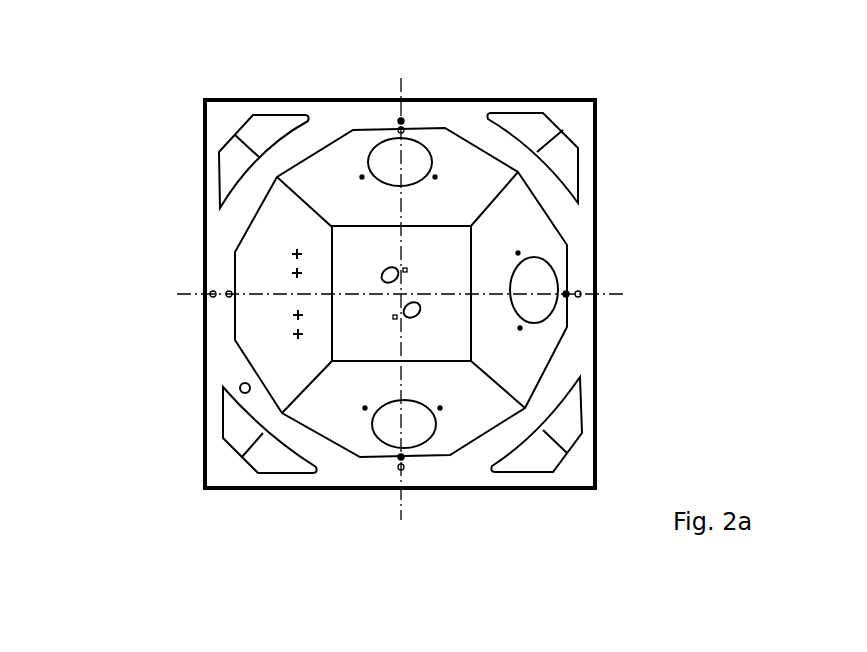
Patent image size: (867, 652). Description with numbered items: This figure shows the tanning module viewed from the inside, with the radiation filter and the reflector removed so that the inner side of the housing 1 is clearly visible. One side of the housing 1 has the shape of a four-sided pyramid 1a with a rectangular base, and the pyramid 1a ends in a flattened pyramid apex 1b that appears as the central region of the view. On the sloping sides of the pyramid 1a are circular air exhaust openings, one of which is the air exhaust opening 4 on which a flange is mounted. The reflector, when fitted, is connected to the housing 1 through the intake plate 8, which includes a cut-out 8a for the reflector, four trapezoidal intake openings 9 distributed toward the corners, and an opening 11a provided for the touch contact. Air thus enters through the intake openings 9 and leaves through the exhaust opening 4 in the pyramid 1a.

The housing 1 is at (596, 200).
The four-sided pyramid 1a is at (268, 234).
The flattened pyramid apex 1b is at (447, 338).
The air exhaust opening 4 is at (390, 440).
The intake plate 8 is at (448, 112).
The cut-out 8a is at (568, 263).
The trapezoidal intake openings 9 is at (578, 130).
The opening 11a is at (232, 383).